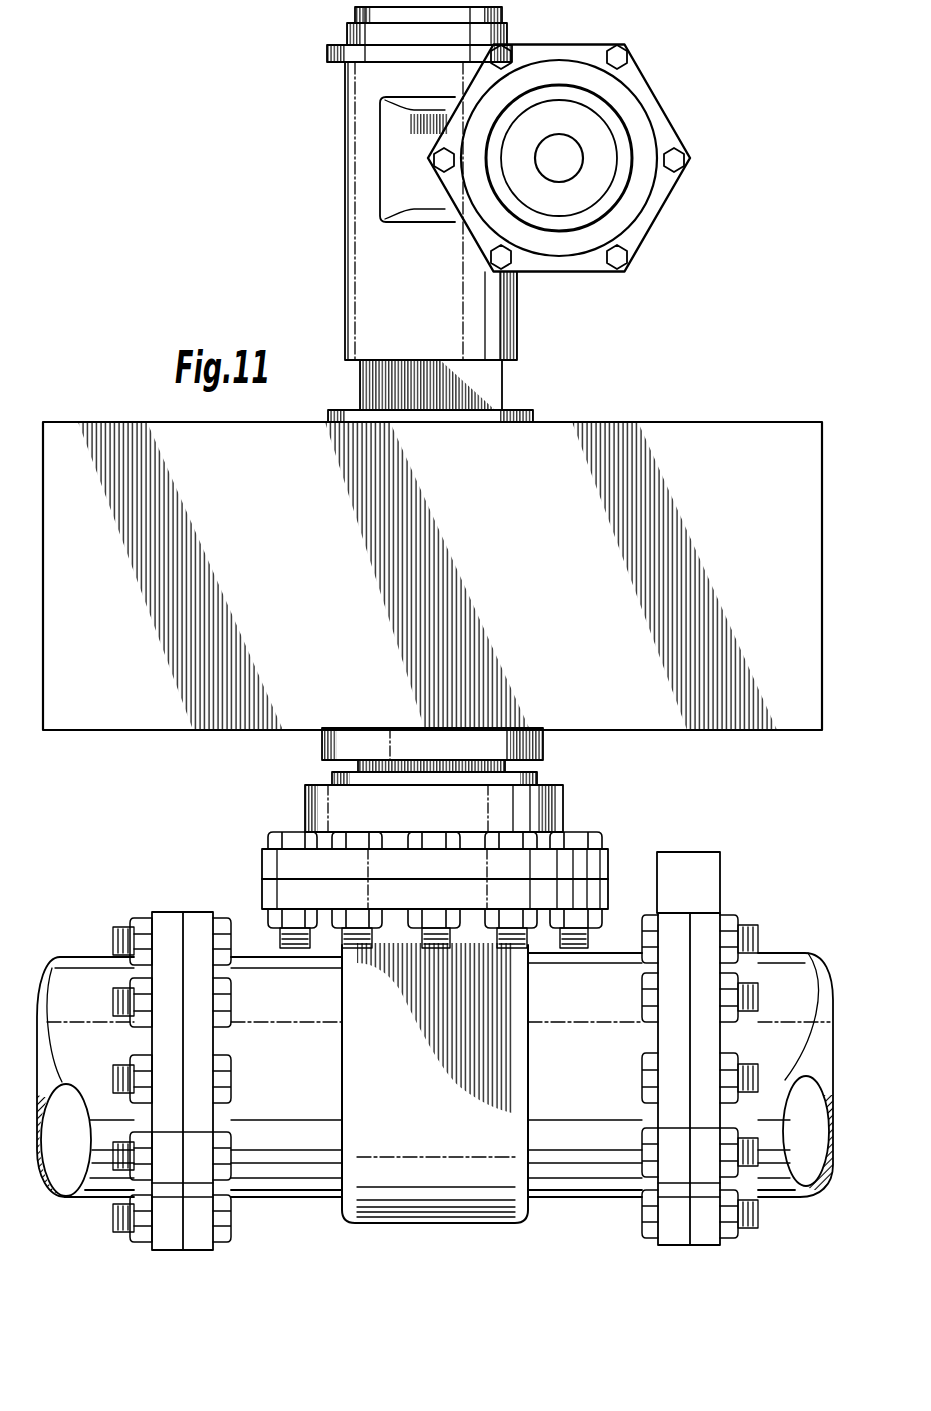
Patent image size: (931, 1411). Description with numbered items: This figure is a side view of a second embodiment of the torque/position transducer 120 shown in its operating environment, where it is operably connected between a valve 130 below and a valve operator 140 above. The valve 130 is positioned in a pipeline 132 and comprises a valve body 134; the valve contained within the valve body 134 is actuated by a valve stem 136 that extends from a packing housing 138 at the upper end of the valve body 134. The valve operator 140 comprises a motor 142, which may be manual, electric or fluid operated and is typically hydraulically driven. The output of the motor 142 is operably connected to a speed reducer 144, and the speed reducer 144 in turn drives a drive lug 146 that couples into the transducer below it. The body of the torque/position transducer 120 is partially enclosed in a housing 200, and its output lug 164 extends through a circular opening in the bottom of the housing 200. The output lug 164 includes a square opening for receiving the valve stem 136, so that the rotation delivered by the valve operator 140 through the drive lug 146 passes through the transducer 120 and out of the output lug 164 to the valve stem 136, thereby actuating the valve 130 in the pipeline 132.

The torque/position transducer 120 is at (123, 406).
The valve 130 is at (303, 818).
The pipeline 132 is at (185, 907).
The valve body 134 is at (303, 1086).
The valve stem 136 is at (358, 765).
The packing housing 138 is at (535, 812).
The valve operator 140 is at (338, 236).
The motor 142 is at (625, 98).
The speed reducer 144 is at (352, 140).
The drive lug 146 is at (503, 375).
The output lug 164 is at (543, 738).
The housing 200 is at (537, 581).